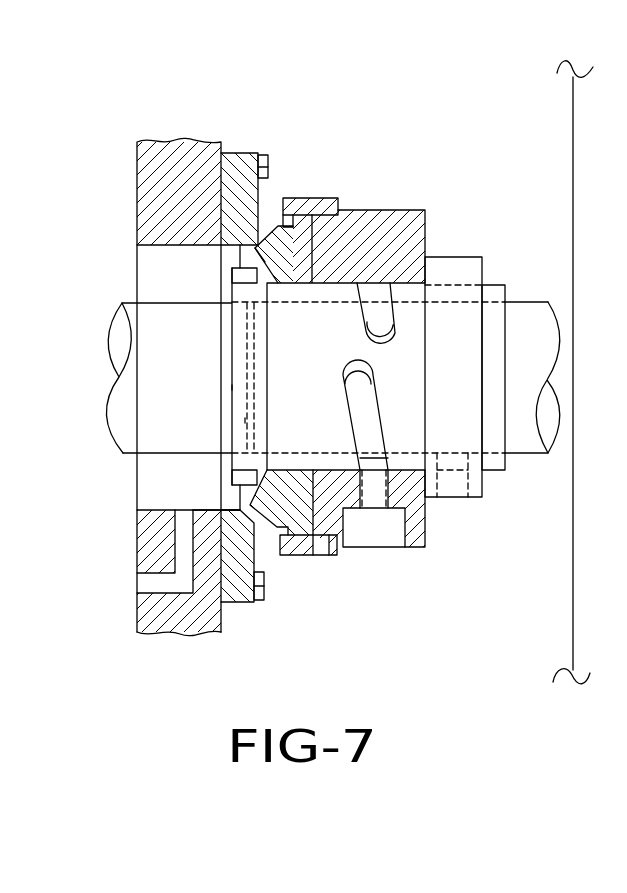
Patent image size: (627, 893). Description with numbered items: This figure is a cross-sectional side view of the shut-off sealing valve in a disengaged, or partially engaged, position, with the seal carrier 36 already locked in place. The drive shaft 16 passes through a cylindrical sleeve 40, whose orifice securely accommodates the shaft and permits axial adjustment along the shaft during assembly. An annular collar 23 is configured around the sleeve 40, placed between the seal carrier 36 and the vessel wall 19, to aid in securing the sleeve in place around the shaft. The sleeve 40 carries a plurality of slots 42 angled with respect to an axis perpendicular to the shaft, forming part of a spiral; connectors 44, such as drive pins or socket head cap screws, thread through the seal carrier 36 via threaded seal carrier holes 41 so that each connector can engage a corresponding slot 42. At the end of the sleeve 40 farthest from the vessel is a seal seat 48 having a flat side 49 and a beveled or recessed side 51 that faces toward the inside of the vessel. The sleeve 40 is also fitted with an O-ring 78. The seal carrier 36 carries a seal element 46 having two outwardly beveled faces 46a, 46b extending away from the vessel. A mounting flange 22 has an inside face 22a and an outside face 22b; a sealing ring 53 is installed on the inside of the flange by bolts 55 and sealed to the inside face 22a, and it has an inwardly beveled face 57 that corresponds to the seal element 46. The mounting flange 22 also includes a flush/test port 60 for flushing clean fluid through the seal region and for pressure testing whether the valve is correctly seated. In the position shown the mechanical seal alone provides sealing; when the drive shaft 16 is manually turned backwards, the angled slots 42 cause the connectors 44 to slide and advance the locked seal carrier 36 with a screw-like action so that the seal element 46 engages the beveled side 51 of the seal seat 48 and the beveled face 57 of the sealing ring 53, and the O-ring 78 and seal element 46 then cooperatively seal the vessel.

The drive shaft 16 is at (528, 460).
The vessel wall 19 is at (573, 125).
The mounting flange 22 is at (152, 135).
The inside face 22a is at (218, 622).
The outside face 22b is at (136, 612).
The annular collar 23 is at (484, 497).
The seal carrier 36 is at (406, 206).
The cylindrical sleeve 40 is at (503, 280).
The threaded seal carrier holes 41 is at (390, 487).
The slots 42 is at (378, 317).
The connectors 44 is at (385, 540).
The seal element 46 is at (275, 498).
The beveled face 46a is at (276, 230).
The beveled face 46b is at (262, 272).
The seal seat 48 is at (238, 366).
The flat side 49 is at (232, 387).
The beveled side 51 is at (248, 277).
The sealing ring 53 is at (242, 153).
The bolts 55 is at (268, 163).
The beveled face 57 is at (252, 513).
The flush/test port 60 is at (143, 585).
The O-ring 78 is at (245, 422).